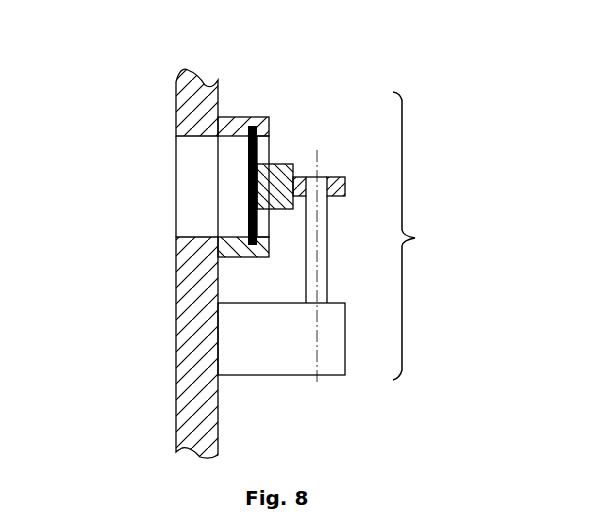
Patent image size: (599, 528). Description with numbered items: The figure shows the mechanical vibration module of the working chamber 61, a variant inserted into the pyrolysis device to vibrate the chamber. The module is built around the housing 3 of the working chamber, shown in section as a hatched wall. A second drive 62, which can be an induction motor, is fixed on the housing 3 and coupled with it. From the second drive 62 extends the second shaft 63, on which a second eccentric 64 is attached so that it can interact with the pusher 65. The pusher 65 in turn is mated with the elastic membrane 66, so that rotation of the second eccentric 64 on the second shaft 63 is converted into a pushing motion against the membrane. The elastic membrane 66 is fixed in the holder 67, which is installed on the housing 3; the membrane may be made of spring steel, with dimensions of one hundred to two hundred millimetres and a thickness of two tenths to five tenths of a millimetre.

The housing 3 is at (153, 245).
The mechanical vibration module of the working chamber 61 is at (472, 236).
The second drive 62 is at (214, 267).
The second shaft 63 is at (205, 235).
The second eccentric 64 is at (310, 113).
The pusher 65 is at (188, 168).
The elastic membrane 66 is at (170, 185).
The holder 67 is at (176, 163).